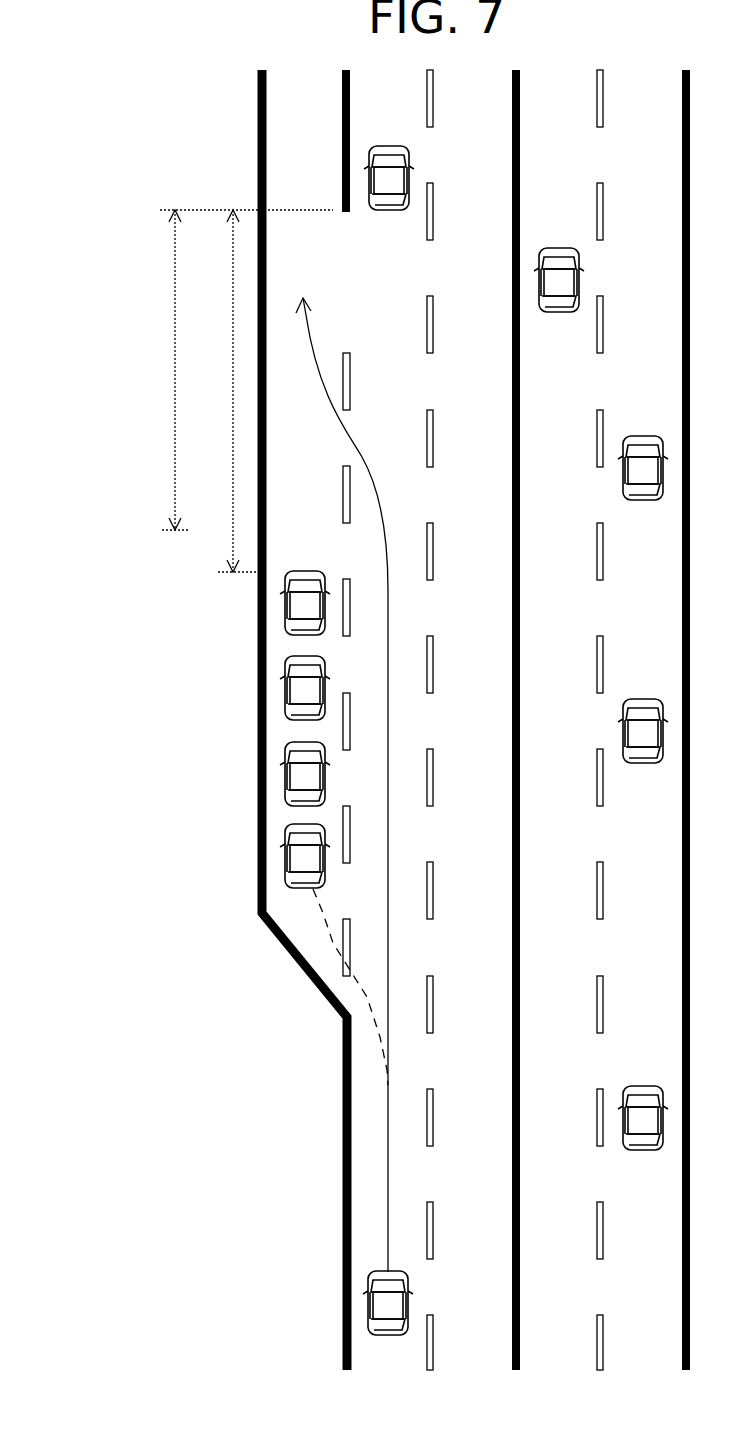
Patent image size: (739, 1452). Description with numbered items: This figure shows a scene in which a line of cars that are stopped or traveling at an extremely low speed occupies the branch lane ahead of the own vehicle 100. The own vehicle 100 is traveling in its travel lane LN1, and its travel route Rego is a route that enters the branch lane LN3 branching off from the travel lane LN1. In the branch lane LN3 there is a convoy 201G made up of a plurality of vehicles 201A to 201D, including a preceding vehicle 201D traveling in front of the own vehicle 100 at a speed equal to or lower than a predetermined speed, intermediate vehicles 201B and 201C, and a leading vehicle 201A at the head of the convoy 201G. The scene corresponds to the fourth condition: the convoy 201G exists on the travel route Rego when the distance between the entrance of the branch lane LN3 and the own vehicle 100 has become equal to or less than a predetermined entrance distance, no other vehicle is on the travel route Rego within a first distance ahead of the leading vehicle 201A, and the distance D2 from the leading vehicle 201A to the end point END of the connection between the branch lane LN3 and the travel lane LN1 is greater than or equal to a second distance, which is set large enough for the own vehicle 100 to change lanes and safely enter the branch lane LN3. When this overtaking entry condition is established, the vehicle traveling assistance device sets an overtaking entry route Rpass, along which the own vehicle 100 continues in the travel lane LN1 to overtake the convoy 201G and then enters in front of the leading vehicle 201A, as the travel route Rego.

The own vehicle 100 is at (411, 1295).
The leading vehicle 201A is at (285, 607).
The vehicle of the convoy 201B is at (285, 692).
The vehicle of the convoy 201C is at (285, 777).
The preceding vehicle 201D is at (244, 856).
The convoy 201G is at (195, 729).
The travel lane LN1 is at (409, 416).
The branch lane LN3 is at (328, 515).
The end point END is at (348, 213).
The entrance end point distance D2 is at (227, 391).
The overtaking entry route Rpass is at (390, 948).
The travel route Rego is at (325, 927).